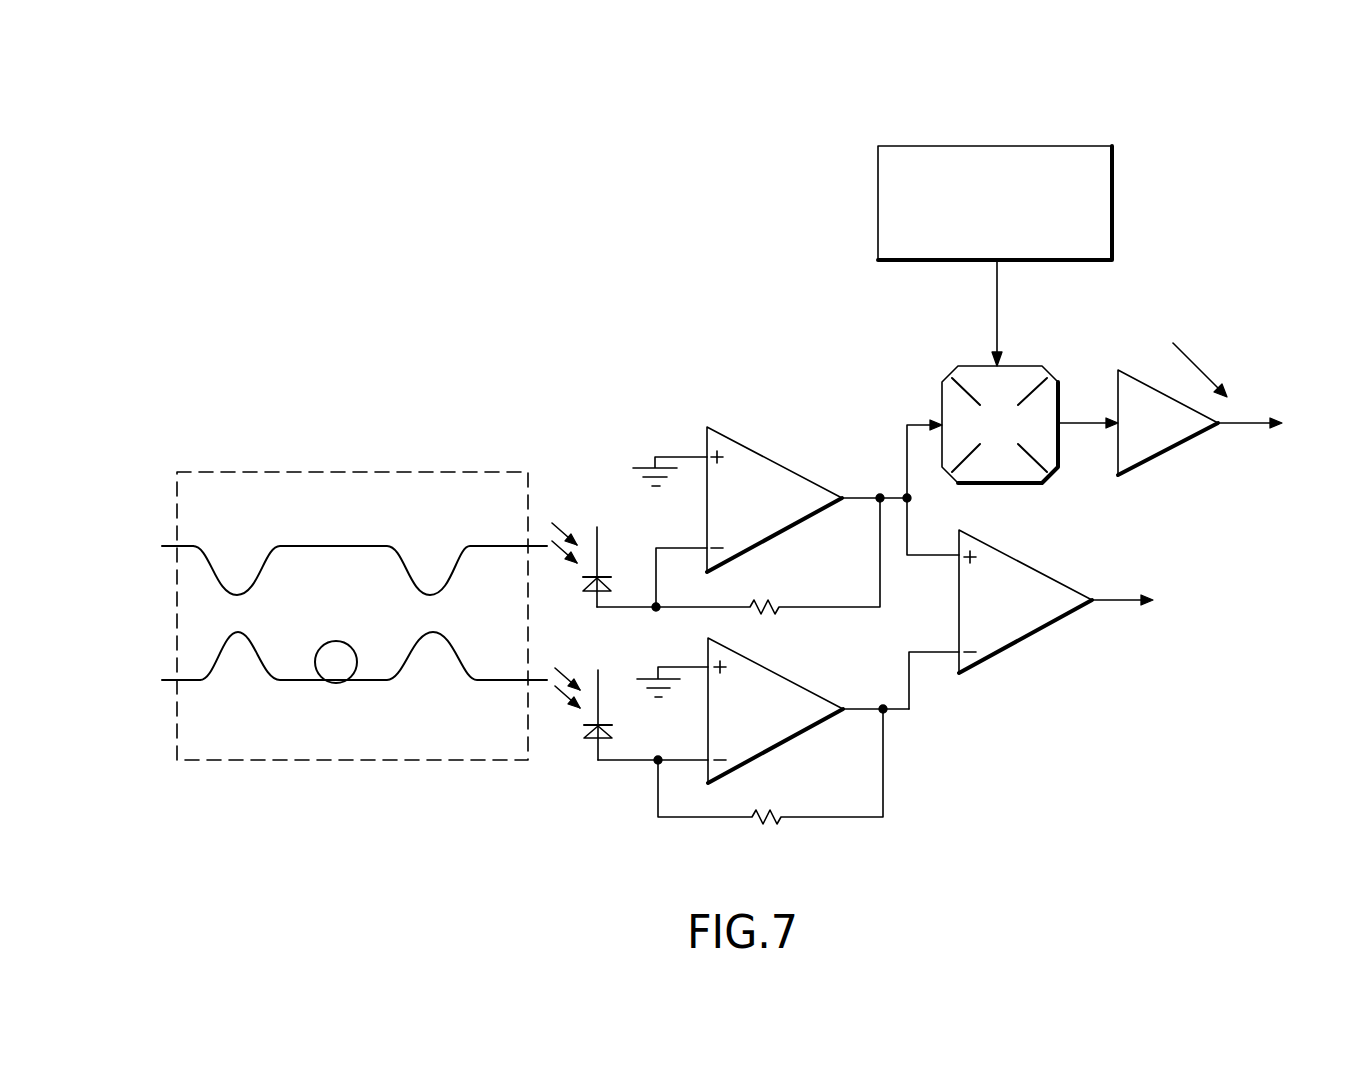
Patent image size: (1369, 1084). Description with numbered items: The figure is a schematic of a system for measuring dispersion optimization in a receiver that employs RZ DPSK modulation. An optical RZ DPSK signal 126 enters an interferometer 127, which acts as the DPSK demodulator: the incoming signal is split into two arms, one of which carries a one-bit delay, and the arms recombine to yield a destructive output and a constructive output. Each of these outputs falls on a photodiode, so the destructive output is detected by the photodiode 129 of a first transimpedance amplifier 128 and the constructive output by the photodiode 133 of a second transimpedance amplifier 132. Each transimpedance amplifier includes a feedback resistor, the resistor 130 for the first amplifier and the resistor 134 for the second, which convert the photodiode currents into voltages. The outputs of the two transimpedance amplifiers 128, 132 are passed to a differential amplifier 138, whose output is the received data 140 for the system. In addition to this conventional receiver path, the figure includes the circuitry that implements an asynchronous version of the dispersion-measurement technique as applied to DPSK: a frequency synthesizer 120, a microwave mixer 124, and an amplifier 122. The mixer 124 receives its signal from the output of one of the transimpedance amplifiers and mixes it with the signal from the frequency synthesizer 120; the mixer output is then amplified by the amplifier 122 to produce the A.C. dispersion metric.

The frequency synthesizer 120 is at (1023, 146).
The amplifier 122 is at (1173, 450).
The mixer 124 is at (957, 372).
The optical RZ DPSK signal 126 is at (62, 538).
The interferometer 127 is at (490, 470).
The transimpedance amplifier 128 is at (723, 432).
The photodiode 129 is at (598, 543).
The resistor 130 is at (825, 608).
The transimpedance amplifier 132 is at (800, 733).
The photodiode 133 is at (598, 762).
The resistor 134 is at (828, 818).
The differential amplifier 138 is at (1032, 637).
The received data 140 is at (1213, 627).